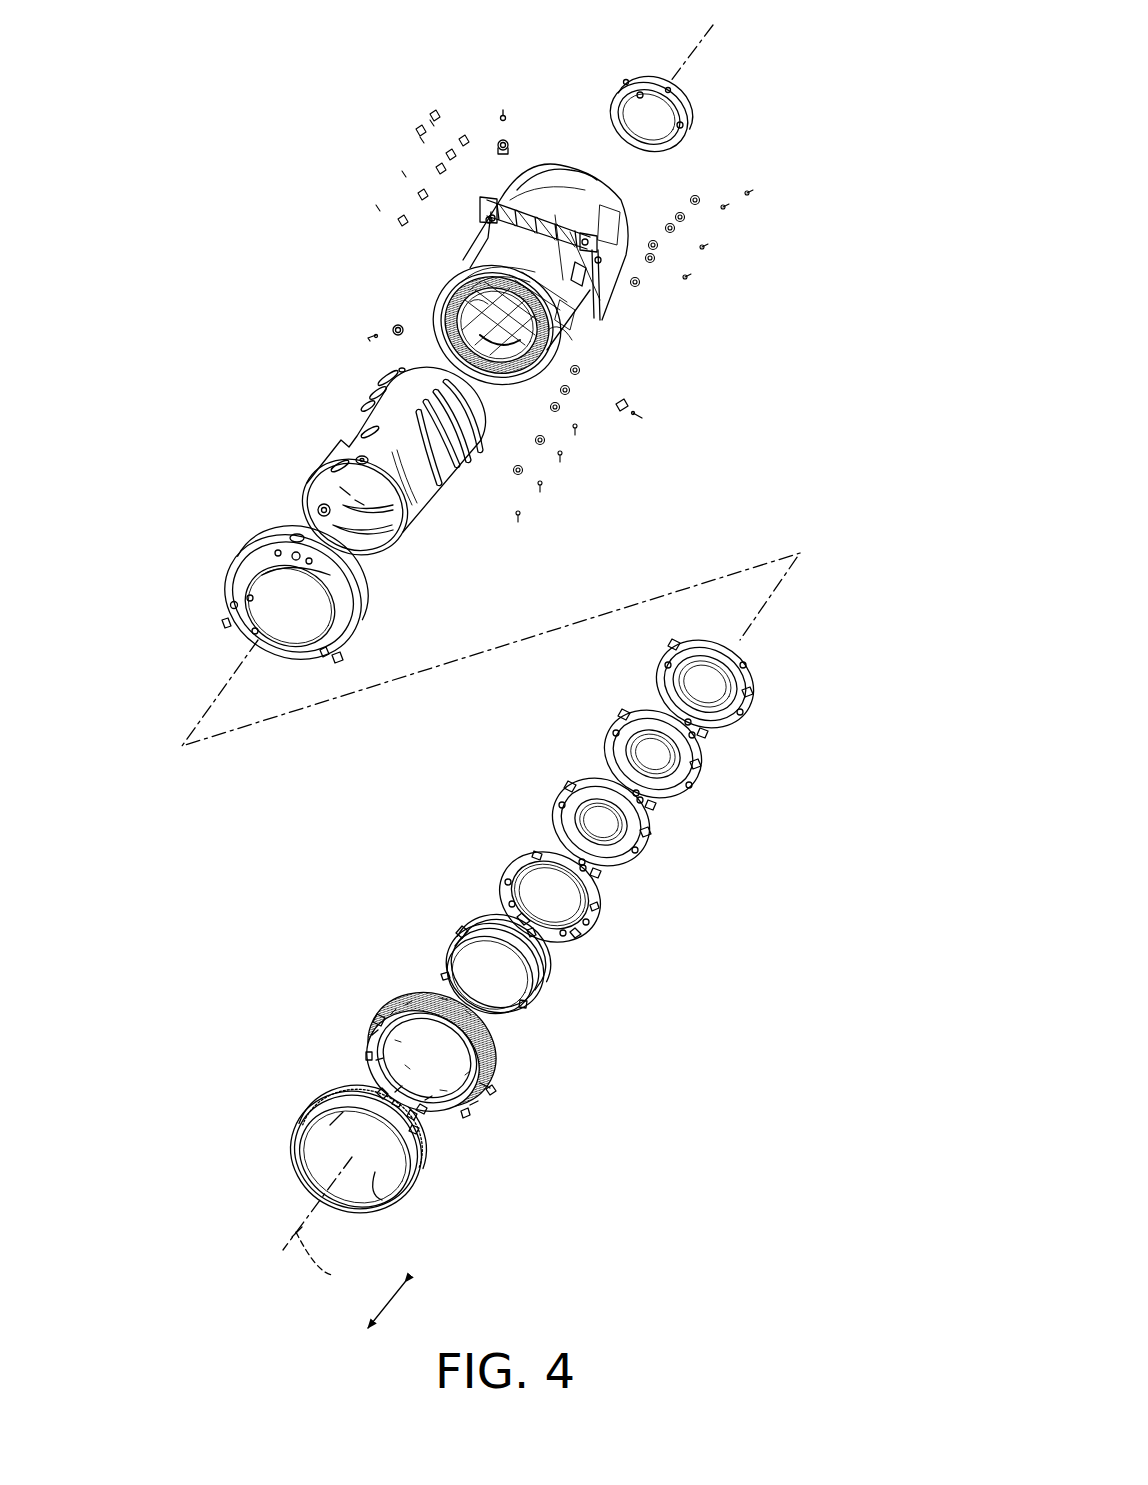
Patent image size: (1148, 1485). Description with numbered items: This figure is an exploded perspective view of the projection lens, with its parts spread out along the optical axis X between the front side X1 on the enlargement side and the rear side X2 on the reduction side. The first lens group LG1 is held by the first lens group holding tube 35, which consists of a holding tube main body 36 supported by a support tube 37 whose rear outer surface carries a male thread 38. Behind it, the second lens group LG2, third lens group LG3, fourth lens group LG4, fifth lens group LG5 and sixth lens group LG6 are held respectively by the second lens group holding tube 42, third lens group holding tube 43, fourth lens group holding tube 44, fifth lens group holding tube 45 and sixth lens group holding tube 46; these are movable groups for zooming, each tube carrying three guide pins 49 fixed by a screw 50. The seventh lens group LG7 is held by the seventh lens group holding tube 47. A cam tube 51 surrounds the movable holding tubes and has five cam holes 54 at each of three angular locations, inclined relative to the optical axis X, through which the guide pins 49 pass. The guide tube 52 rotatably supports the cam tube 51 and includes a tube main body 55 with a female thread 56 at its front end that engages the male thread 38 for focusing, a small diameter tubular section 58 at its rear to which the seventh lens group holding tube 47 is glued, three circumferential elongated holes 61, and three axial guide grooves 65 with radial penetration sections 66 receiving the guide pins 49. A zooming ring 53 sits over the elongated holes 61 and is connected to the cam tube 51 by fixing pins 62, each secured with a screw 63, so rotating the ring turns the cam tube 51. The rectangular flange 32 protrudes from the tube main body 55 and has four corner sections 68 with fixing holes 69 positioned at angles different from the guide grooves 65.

The flange 32 is at (505, 210).
The first lens group holding tube 35 is at (340, 978).
The holding tube main body 36 is at (327, 1093).
The support tube 37 is at (397, 1007).
The male thread 38 is at (400, 1003).
The second lens group holding tube 42 is at (468, 925).
The third lens group holding tube 43 is at (520, 855).
The fourth lens group holding tube 44 is at (570, 785).
The fifth lens group holding tube 45 is at (610, 732).
The sixth lens group holding tube 46 is at (660, 668).
The seventh lens group holding tube 47 is at (630, 80).
The guide pin 49 is at (441, 172).
The screw 50 is at (376, 205).
The cam tube 51 is at (302, 463).
The guide tube 52 is at (430, 295).
The zooming ring 53 is at (245, 557).
The cam hole 54 is at (472, 452).
The tube main body 55 is at (488, 240).
The female thread 56 is at (455, 322).
The small diameter tubular section 58 is at (562, 172).
The elongated hole 61 is at (480, 275).
The fixing pin 62 is at (505, 138).
The screw 63 is at (505, 115).
The guide groove 65 is at (472, 236).
The penetration section 66 is at (605, 245).
The corner section 68 is at (490, 206).
The fixing hole 69 is at (487, 217).
The first lens group LG1 is at (395, 1188).
The second lens group LG2 is at (515, 1005).
The third lens group LG3 is at (578, 930).
The fourth lens group LG4 is at (615, 855).
The fifth lens group LG5 is at (670, 790).
The sixth lens group LG6 is at (720, 730).
The seventh lens group LG7 is at (665, 118).
The optical axis X is at (322, 1257).
The front side X1 is at (376, 1317).
The rear side X2 is at (417, 1264).